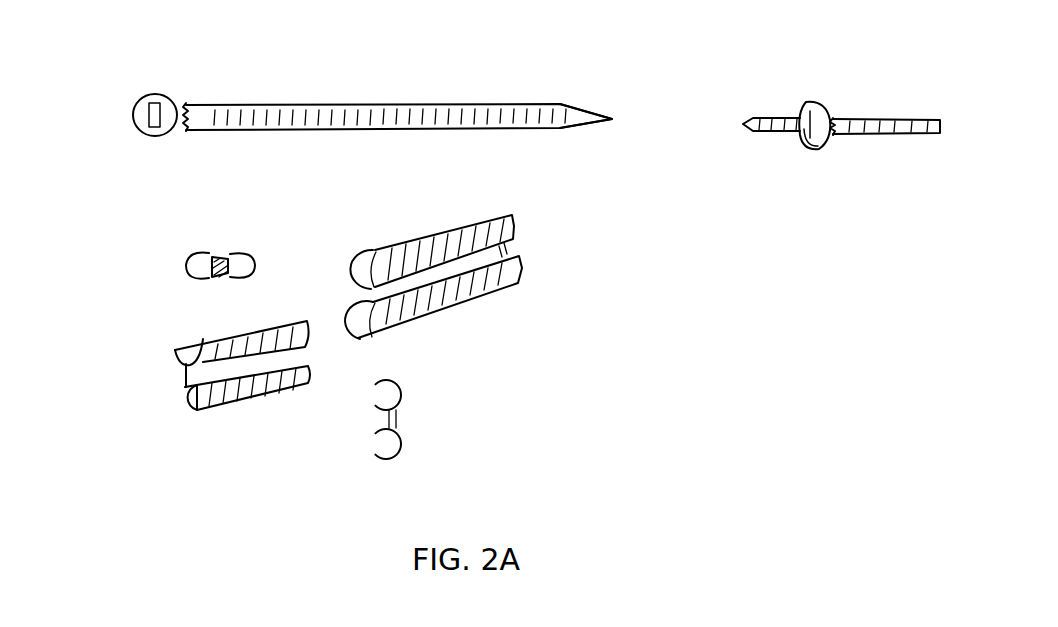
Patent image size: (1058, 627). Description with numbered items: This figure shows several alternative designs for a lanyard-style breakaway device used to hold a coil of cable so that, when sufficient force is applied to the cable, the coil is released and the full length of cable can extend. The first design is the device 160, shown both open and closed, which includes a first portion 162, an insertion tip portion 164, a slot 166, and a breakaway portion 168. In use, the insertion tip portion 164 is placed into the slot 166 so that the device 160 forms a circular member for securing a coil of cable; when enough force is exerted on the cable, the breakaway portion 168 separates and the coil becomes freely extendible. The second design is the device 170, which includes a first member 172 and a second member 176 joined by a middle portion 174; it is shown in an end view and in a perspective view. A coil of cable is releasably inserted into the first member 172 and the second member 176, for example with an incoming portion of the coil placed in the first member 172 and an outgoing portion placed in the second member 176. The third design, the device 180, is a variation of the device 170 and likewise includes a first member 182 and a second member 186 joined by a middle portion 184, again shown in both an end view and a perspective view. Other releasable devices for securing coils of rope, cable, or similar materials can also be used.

The device 160 is at (114, 73).
The first portion 162 is at (376, 107).
The insertion tip portion 164 is at (590, 112).
The slot 166 is at (149, 132).
The breakaway portion 168 is at (187, 105).
The device 170 is at (146, 270).
The first member 172 is at (192, 251).
The middle portion 174 is at (222, 258).
The second member 176 is at (243, 255).
The device 180 is at (376, 226).
The first member 182 is at (512, 221).
The middle portion 184 is at (506, 244).
The second member 186 is at (521, 264).